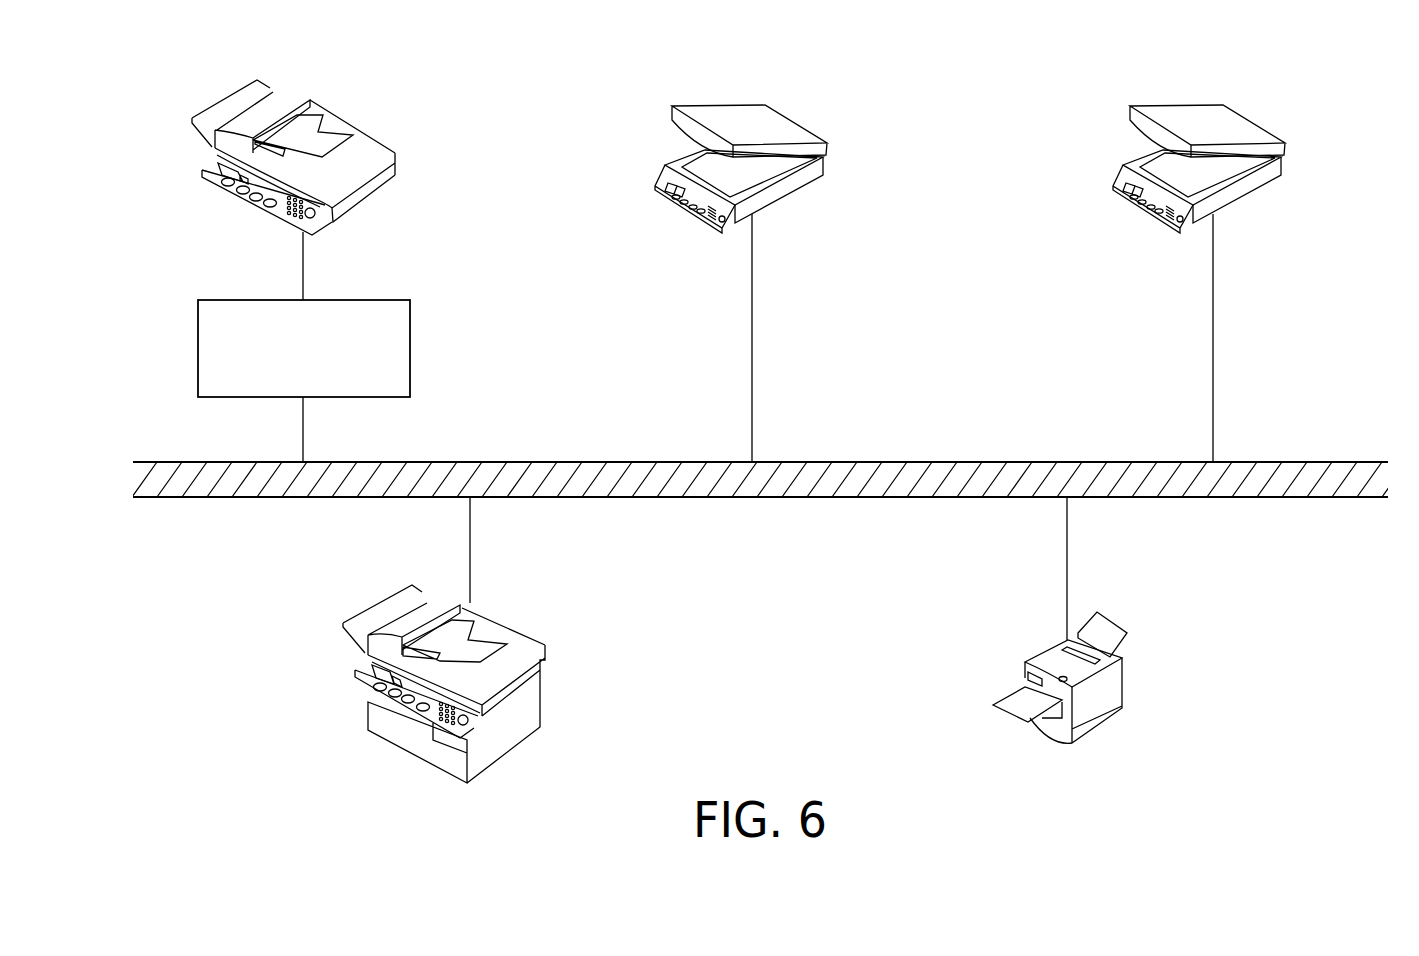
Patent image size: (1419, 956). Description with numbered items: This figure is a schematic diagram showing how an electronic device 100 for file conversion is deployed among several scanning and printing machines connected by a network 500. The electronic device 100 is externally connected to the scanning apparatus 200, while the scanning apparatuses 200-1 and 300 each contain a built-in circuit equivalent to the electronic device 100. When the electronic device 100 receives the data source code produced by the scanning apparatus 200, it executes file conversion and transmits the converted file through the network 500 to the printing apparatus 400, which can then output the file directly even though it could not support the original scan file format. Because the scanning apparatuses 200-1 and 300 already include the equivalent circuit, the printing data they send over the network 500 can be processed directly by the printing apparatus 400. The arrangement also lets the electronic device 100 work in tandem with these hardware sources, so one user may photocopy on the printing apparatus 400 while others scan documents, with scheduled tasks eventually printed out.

The electronic device 100 is at (198, 350).
The scanning apparatus 200 is at (233, 193).
The scanning apparatus 200-1 is at (740, 112).
The scanning apparatus 300 is at (1197, 113).
The printing apparatus 400 is at (408, 733).
The network 500 is at (1309, 497).